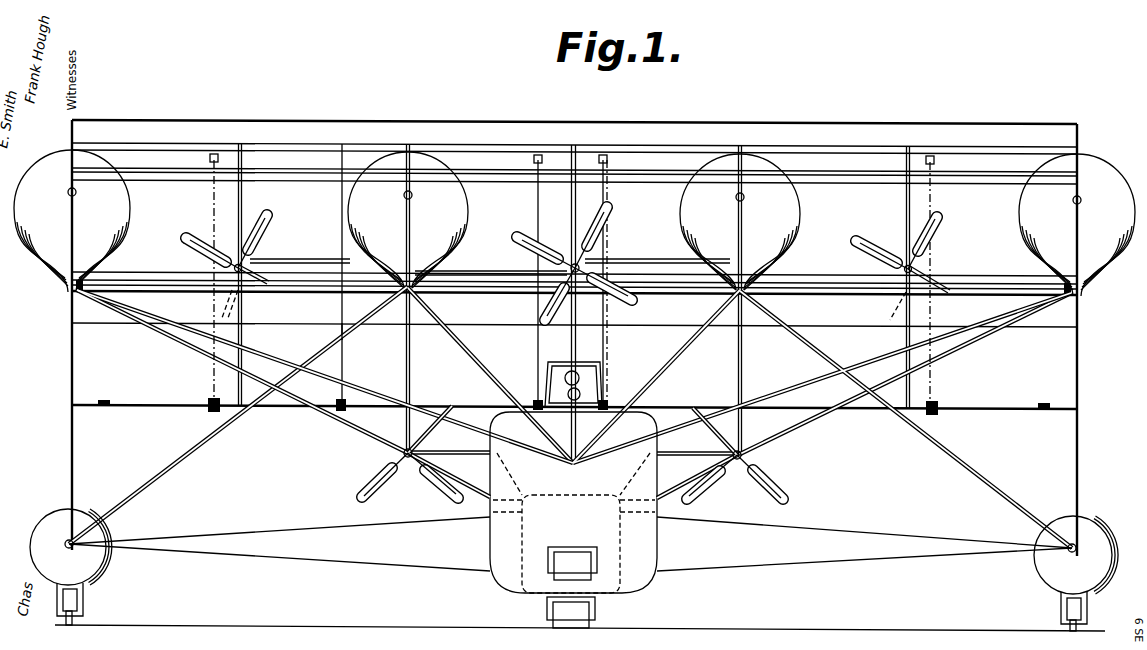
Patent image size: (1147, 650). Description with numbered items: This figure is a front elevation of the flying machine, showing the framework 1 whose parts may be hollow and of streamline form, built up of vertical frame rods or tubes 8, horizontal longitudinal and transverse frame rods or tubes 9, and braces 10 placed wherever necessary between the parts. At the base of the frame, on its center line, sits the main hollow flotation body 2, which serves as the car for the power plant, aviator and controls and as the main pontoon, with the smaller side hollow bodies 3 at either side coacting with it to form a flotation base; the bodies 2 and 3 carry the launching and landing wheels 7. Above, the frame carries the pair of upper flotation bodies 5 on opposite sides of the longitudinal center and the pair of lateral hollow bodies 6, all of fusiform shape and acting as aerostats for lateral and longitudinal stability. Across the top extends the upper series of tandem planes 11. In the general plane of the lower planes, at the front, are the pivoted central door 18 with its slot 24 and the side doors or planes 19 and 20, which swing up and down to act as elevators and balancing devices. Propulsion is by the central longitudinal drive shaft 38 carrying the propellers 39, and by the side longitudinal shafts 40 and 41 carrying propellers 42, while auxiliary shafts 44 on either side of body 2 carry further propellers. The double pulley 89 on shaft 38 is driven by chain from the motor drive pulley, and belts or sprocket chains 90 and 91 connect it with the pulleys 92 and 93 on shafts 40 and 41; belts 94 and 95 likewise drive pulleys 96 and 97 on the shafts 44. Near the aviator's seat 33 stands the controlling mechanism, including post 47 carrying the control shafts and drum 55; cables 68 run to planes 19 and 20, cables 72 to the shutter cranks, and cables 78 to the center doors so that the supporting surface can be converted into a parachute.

The framework 1 is at (271, 408).
The main hollow flotation body 2 is at (625, 527).
The side hollow bodies 3 is at (62, 543).
The upper flotation bodies 5 is at (574, 221).
The lateral hollow bodies 6 is at (574, 223).
The launching and landing wheels 7 is at (592, 615).
The vertical frame rods or tubes 8 is at (70, 368).
The horizontal frame rods or tubes 9 is at (243, 208).
The braces 10 is at (165, 470).
The upper planes 11 is at (225, 119).
The central front door 18 is at (476, 269).
The front side door or plane 19 is at (958, 296).
The front side door or plane 20 is at (164, 270).
The slots 24 is at (580, 316).
The aviator's seat 33 is at (598, 367).
The central longitudinal drive shaft 38 is at (585, 266).
The propellers 39 is at (546, 307).
The side longitudinal shaft 40 is at (921, 263).
The side longitudinal shaft 41 is at (250, 262).
The side propellers 42 is at (193, 232).
The auxiliary propeller shafts 44 is at (557, 480).
The post 47 is at (584, 396).
The drum or pulley 55 is at (567, 373).
The cables 68 is at (212, 385).
The cables 72 is at (332, 339).
The cables 78 is at (538, 380).
The pulley 89 is at (548, 227).
The belt or sprocket chain 90 is at (682, 260).
The belt or sprocket chain 91 is at (327, 257).
The pulley or sprocket wheel 92 is at (905, 264).
The pulley or sprocket wheel 93 is at (204, 291).
The belt or sprocket chain 94 is at (470, 518).
The belt or sprocket chain 95 is at (675, 520).
The pulley or sprocket wheel 96 is at (745, 455).
The pulley or sprocket wheel 97 is at (402, 454).